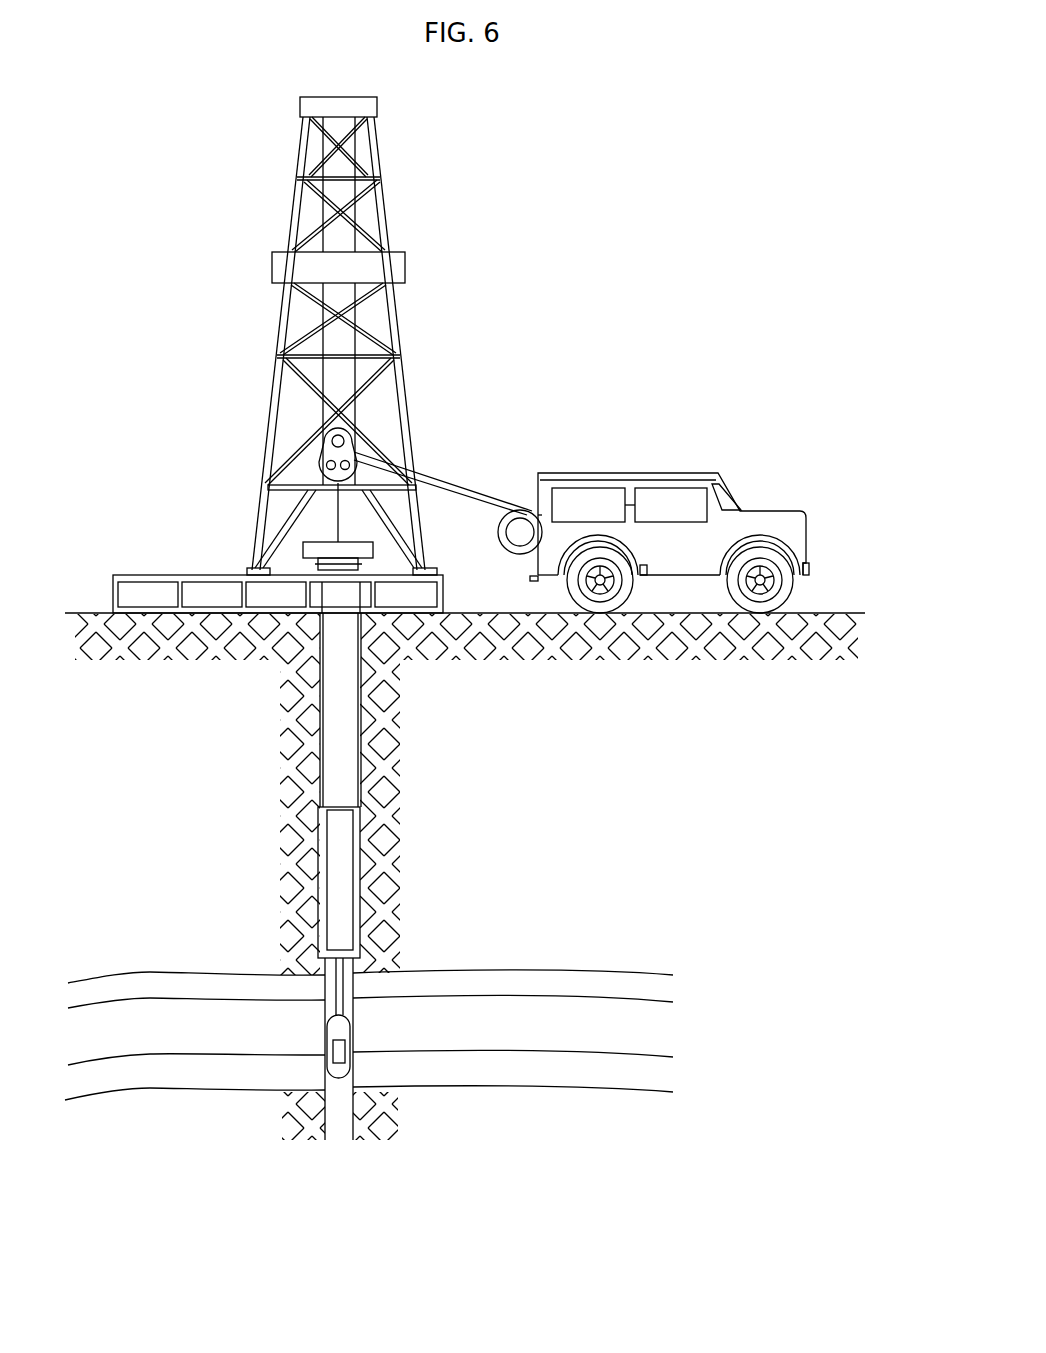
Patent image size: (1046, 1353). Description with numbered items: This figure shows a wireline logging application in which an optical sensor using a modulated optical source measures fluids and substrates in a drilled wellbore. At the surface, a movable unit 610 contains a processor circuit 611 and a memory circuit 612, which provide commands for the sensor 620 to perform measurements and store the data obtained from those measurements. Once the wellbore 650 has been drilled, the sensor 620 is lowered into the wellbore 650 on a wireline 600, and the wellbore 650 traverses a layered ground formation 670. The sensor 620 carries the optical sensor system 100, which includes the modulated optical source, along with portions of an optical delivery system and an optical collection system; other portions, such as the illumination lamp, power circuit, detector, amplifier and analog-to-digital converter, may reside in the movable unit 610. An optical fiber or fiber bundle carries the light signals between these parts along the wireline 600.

The movable unit 610 is at (772, 513).
The processor circuit 611 is at (593, 505).
The memory circuit 612 is at (671, 505).
The wireline 600 is at (340, 1000).
The sensor 620 is at (335, 1027).
The optical sensor system 100 is at (342, 1052).
The wellbore 650 is at (352, 1122).
The layered ground formation 670 is at (683, 960).